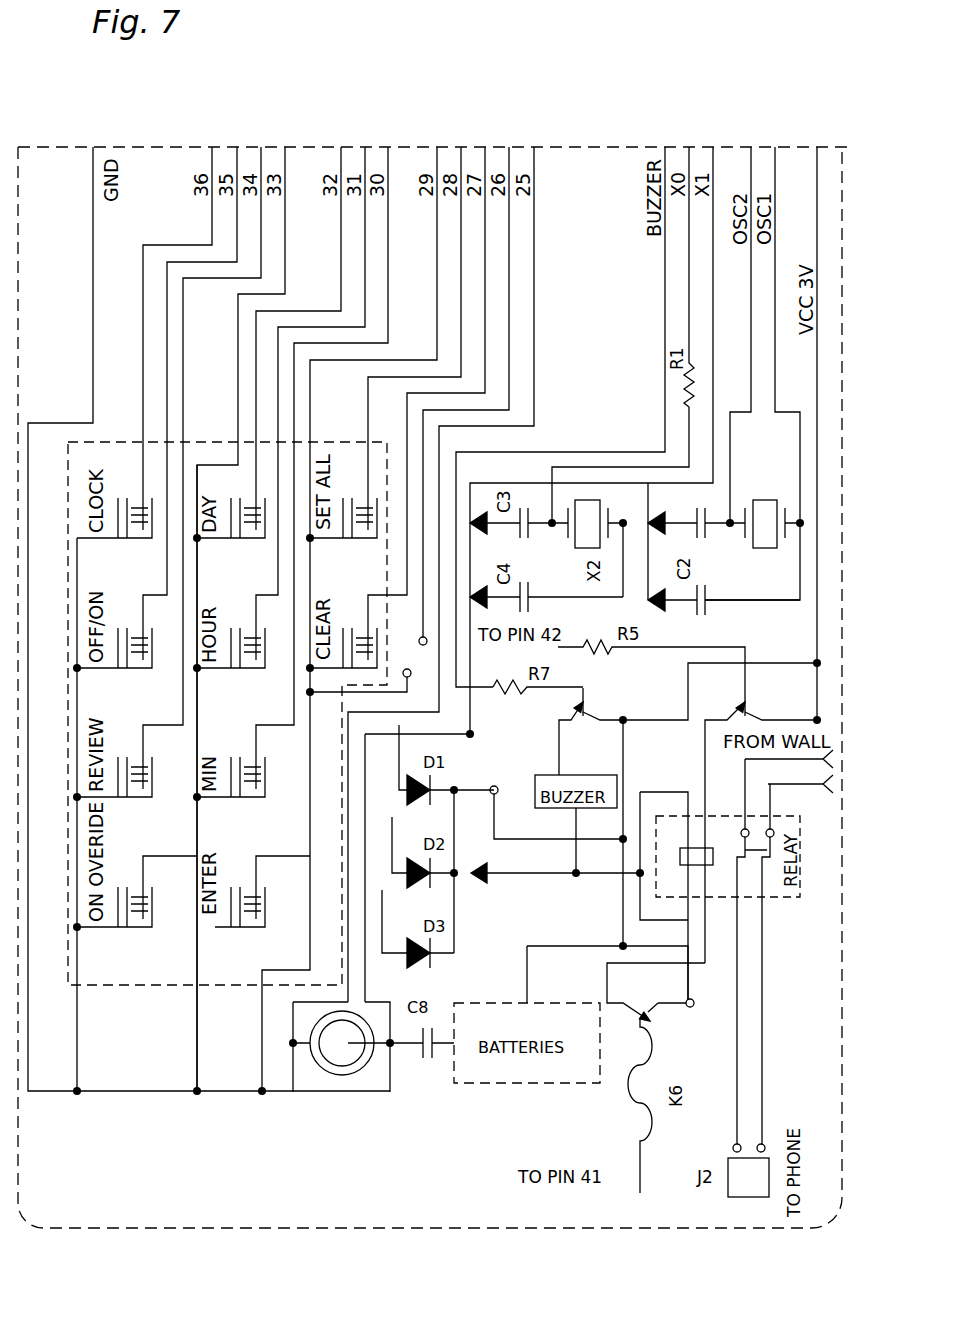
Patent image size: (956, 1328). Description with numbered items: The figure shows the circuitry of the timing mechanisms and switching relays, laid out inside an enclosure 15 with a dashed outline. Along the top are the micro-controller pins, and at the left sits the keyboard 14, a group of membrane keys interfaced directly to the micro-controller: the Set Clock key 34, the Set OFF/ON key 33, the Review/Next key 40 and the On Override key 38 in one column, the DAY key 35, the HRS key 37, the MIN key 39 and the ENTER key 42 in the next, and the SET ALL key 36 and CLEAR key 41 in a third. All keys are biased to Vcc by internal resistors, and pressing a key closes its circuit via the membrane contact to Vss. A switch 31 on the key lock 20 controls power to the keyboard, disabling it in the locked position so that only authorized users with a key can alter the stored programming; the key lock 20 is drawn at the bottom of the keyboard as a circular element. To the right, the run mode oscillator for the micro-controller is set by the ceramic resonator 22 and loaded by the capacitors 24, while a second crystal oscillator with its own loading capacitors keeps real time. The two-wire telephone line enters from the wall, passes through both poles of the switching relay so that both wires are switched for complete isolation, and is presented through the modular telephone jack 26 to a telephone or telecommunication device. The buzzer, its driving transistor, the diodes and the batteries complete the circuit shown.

The keyboard 14 is at (118, 445).
The housing 15 is at (118, 1218).
The key lock 20 is at (342, 1058).
The ceramic resonator 22 is at (772, 505).
The capacitors 24 is at (689, 515).
The modular telephone jack 26 is at (812, 790).
The switch 31 is at (368, 664).
The Set OFF/ON key 33 is at (121, 663).
The Set Clock key 34 is at (121, 533).
The DAY key 35 is at (237, 533).
The SET ALL key 36 is at (343, 501).
The HRS key 37 is at (238, 663).
The On Override key 38 is at (137, 908).
The MIN key 39 is at (237, 794).
The Review/Next key 40 is at (121, 794).
The CLEAR key 41 is at (343, 630).
The ENTER key 42 is at (262, 908).